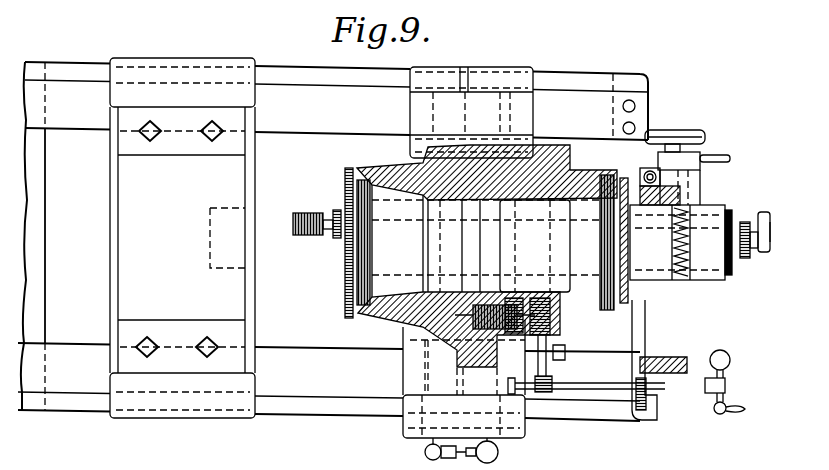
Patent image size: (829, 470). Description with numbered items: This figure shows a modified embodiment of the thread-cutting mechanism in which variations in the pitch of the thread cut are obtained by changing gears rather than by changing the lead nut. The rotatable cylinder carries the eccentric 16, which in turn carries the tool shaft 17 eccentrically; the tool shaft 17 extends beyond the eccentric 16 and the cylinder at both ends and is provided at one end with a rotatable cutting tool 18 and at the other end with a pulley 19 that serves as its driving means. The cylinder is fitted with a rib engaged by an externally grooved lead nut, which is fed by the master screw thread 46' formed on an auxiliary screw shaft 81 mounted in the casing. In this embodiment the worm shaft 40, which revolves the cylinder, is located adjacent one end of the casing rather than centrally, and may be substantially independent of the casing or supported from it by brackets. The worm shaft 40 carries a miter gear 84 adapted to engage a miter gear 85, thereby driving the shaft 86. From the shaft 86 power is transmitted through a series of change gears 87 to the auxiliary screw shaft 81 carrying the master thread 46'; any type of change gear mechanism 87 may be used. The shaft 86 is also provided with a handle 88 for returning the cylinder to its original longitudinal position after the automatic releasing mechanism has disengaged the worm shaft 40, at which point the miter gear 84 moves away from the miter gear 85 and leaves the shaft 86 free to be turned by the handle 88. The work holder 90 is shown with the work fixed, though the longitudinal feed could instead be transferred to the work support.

The second shaft 16 is at (728, 272).
The tool shaft 17 is at (748, 222).
The rotatable cutting tool 18 is at (309, 236).
The pulley 19 is at (768, 216).
The worm shaft 40 is at (676, 130).
The master screw thread 46' is at (527, 303).
The auxiliary screw shaft 81 is at (430, 328).
The miter gear 84 is at (690, 366).
The miter gear 85 is at (650, 408).
The shaft 86 is at (596, 390).
The change gears 87 is at (562, 360).
The handle 88 is at (733, 412).
The work holder body 90 is at (486, 256).